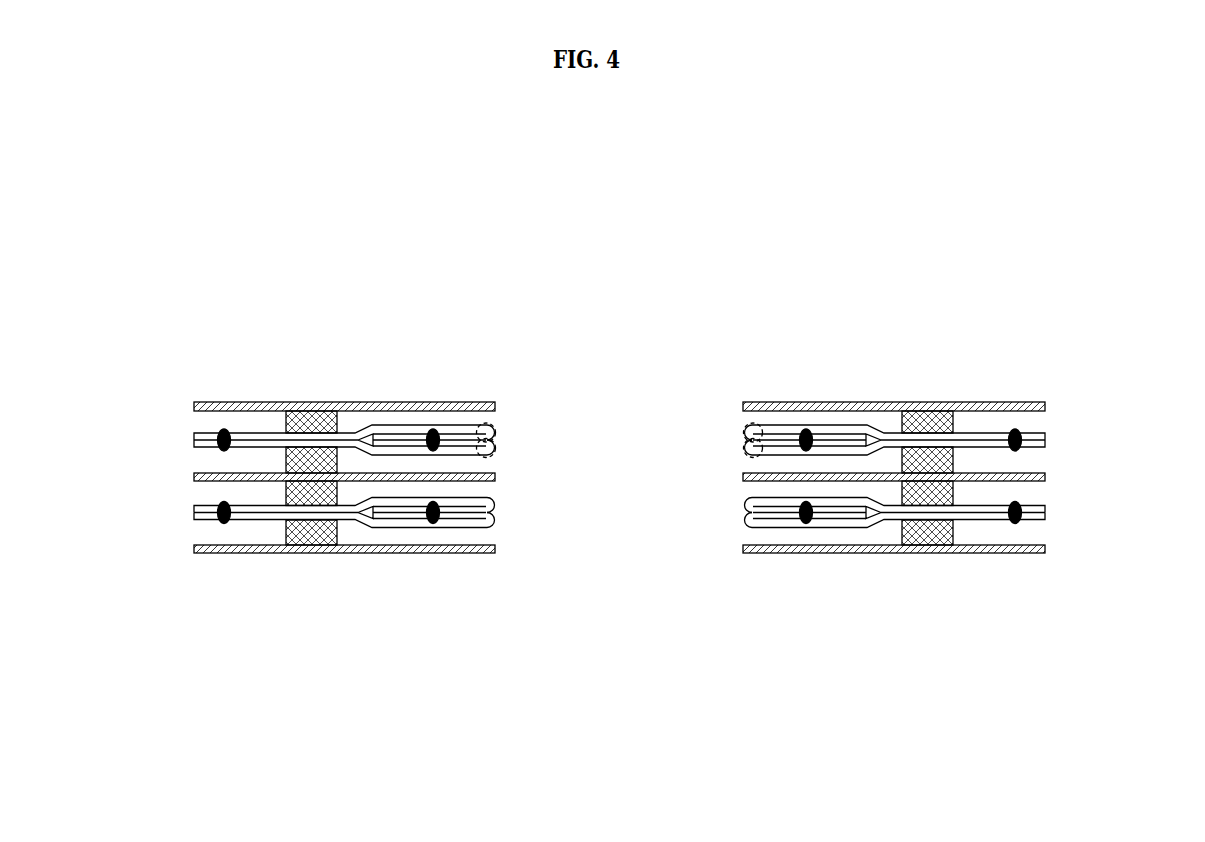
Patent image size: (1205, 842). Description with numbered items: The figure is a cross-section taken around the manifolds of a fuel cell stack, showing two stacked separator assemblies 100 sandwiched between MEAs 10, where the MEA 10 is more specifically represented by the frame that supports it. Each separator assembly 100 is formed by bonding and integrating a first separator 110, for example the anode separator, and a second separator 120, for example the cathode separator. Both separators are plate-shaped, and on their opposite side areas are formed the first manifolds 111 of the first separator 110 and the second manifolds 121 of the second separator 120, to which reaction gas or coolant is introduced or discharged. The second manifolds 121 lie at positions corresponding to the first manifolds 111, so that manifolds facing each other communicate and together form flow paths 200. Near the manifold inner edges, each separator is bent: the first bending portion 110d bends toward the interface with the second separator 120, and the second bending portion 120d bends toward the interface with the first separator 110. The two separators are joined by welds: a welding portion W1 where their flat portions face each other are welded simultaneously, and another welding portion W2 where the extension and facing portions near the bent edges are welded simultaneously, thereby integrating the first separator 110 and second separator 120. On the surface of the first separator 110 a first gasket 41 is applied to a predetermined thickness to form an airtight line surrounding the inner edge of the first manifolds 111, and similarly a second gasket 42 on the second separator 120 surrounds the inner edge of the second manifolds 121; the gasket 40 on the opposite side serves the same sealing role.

The MEA 10 is at (194, 404).
The gasket 40 is at (953, 423).
The first gasket 41 is at (286, 420).
The second gasket 42 is at (338, 456).
The separator assembly 100 is at (105, 430).
The first separator 110 is at (194, 437).
The second separator 120 is at (194, 447).
The first bending portion 110d is at (499, 433).
The second bending portion 120d is at (499, 449).
The first manifolds 111 is at (533, 503).
The second manifolds 121 is at (572, 525).
The flow paths 200 is at (665, 536).
The welding portion W1 is at (223, 429).
The welding portion W2 is at (433, 429).